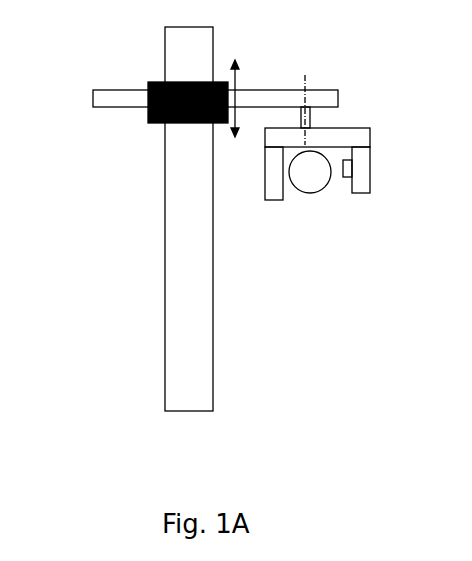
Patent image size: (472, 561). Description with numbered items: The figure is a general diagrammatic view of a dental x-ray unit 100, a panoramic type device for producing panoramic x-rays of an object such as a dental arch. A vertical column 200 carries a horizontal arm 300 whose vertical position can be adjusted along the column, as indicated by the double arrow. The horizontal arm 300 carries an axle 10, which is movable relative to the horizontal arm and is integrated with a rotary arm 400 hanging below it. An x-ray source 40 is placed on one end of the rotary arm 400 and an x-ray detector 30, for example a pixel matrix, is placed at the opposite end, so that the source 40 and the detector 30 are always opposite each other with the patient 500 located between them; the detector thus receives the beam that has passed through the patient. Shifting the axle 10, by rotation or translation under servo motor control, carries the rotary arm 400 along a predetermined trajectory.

The dental x-ray unit 100 is at (126, 186).
The vertical column 200 is at (188, 317).
The horizontal arm 300 is at (267, 100).
The axle 10 is at (312, 112).
The rotary arm 400 is at (330, 137).
The x-ray detector 30 is at (275, 175).
The x-ray source 40 is at (358, 175).
The patient 500 is at (312, 175).